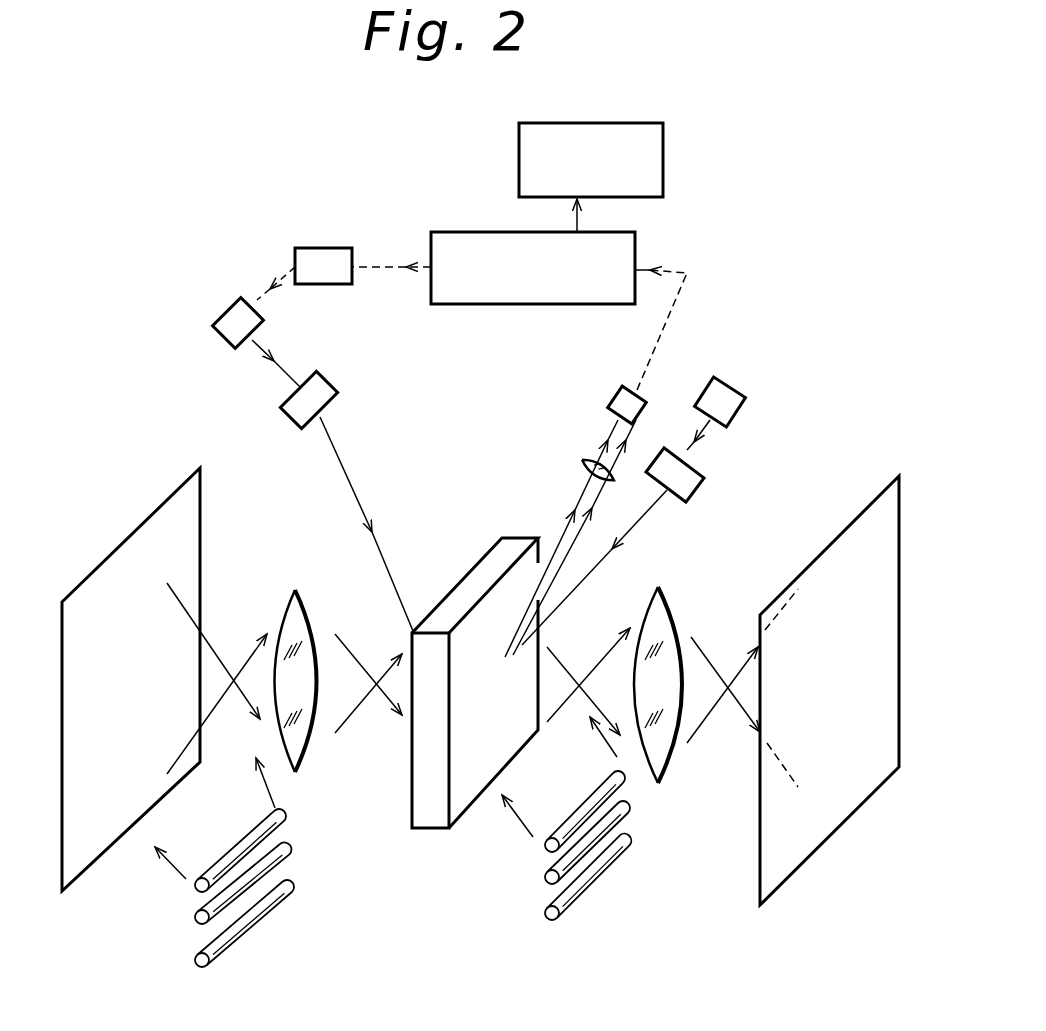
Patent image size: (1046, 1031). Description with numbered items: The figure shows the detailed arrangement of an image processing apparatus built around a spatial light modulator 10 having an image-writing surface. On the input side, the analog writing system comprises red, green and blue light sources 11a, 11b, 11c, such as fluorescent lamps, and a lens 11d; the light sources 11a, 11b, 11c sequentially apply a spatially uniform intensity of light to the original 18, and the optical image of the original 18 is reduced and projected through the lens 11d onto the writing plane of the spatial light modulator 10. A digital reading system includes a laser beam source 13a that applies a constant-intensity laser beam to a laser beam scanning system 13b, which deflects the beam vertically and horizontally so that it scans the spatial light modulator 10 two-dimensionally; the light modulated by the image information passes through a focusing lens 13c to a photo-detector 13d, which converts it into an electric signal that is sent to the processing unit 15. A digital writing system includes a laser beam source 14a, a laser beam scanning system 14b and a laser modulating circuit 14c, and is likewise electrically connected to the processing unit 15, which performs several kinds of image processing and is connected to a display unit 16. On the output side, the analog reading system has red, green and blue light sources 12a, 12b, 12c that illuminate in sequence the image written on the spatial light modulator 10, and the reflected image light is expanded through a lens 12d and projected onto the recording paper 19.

The spatial light modulator 10 is at (453, 602).
The light source 11a is at (282, 818).
The light source 11b is at (286, 852).
The light source 11c is at (288, 890).
The lens 11d is at (295, 600).
The light source 12a is at (545, 845).
The light source 12b is at (546, 877).
The light source 12c is at (546, 913).
The lens 12d is at (662, 598).
The laser beam source 13a is at (728, 392).
The laser beam scanning system 13b is at (702, 480).
The focusing lens 13c is at (585, 465).
The photo-detector 13d is at (615, 392).
The laser beam source 14a is at (220, 318).
The laser beam scanning system 14b is at (322, 377).
The laser modulating circuit 14c is at (310, 248).
The processing unit 15 is at (635, 246).
The display unit 16 is at (663, 158).
The original 18 is at (109, 557).
The recording paper 19 is at (827, 838).